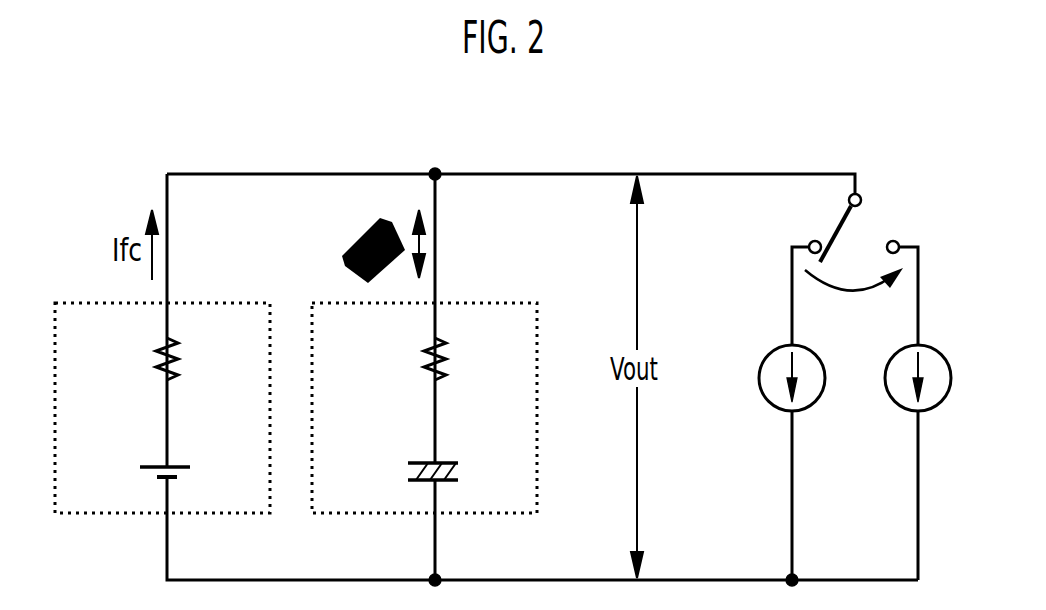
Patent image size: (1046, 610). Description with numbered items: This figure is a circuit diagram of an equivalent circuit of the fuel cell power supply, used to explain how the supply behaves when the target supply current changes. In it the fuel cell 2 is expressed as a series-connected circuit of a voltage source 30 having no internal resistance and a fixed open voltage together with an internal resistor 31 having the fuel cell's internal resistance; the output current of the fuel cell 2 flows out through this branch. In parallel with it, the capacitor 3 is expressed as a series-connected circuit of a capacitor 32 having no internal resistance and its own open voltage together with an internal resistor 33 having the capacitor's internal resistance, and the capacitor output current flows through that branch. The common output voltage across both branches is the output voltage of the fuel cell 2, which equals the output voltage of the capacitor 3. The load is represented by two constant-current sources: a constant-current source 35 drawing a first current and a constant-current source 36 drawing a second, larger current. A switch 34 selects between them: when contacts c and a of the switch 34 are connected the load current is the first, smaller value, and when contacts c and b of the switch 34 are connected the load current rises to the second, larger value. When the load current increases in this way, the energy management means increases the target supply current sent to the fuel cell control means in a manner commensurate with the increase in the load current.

The fuel cell 2 is at (203, 303).
The capacitor 3 is at (472, 303).
The voltage source 30 is at (183, 459).
The internal resistor 31 is at (178, 368).
The capacitor 32 is at (448, 459).
The internal resistor 33 is at (447, 368).
The switch 34 is at (857, 235).
The constant-current source 35 is at (786, 346).
The constant-current source 36 is at (912, 346).